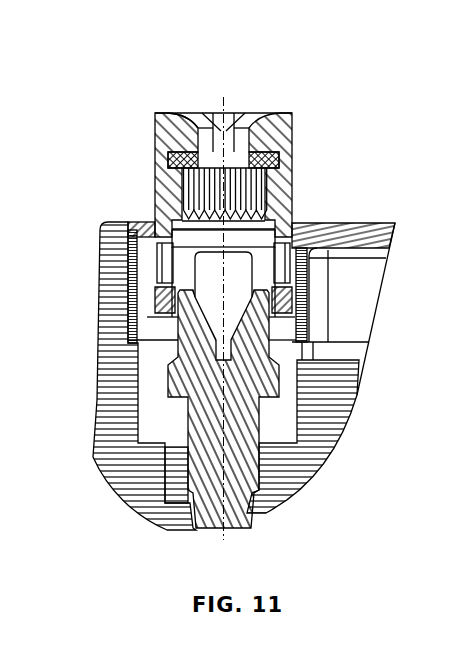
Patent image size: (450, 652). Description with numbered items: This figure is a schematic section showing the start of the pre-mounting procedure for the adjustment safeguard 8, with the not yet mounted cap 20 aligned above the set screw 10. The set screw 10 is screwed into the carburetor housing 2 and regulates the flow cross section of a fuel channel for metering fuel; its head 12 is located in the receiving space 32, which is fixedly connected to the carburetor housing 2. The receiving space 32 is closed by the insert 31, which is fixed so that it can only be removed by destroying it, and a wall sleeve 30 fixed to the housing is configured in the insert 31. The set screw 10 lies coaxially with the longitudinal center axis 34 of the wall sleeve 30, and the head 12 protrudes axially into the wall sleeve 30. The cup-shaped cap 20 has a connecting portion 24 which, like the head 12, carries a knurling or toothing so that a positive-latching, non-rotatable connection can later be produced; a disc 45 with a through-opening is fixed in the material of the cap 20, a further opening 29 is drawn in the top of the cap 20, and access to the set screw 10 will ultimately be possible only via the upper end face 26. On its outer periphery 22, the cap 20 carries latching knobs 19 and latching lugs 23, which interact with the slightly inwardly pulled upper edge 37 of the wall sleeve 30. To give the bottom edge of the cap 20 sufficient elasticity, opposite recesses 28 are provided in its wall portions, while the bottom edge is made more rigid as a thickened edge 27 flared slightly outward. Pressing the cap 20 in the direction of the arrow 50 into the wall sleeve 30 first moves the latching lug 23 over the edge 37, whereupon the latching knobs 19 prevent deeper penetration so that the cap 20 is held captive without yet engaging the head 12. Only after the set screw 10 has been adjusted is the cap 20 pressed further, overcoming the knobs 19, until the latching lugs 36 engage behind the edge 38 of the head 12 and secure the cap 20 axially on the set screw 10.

The carburetor housing 2 is at (113, 445).
The adjustment safeguard 8 is at (120, 168).
The set screw 10 is at (180, 473).
The head 12 is at (313, 340).
The latching knobs 19 is at (293, 197).
The cap 20 is at (290, 130).
The outer periphery 22 is at (160, 153).
The latching lugs 23 is at (295, 237).
The connecting portion 24 is at (190, 205).
The end face 26 is at (170, 97).
The thickened edge 27 is at (165, 318).
The recesses 28 is at (150, 283).
The bore 29 is at (232, 118).
The wall sleeve 30 is at (147, 256).
The insert 31 is at (355, 233).
The receiving space 32 is at (116, 237).
The longitudinal center axis 34 is at (220, 125).
The latching lugs 36 is at (160, 300).
The edge 37 is at (168, 265).
The edge 38 is at (167, 397).
The disc 45 is at (275, 162).
The arrow 50 is at (224, 96).